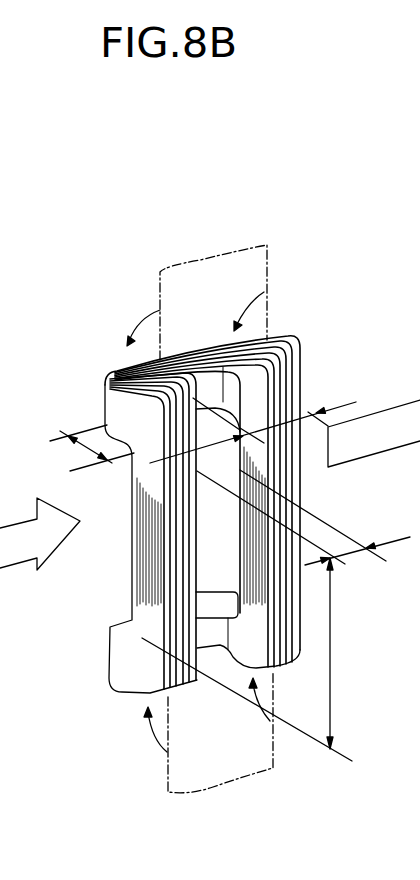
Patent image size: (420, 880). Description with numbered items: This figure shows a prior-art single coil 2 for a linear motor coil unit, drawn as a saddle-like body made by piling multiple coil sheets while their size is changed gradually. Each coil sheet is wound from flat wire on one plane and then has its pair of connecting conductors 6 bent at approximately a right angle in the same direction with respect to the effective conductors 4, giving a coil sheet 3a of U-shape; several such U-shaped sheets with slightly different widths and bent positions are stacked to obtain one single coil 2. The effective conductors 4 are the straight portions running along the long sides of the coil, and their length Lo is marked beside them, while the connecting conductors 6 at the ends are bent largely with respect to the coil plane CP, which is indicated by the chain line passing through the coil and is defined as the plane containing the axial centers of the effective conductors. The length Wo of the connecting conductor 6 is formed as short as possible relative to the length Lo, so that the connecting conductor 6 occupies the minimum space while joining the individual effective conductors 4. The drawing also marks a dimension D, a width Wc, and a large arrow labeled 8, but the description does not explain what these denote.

The single coil 2 is at (277, 287).
The coil sheet in a U-shape 3a is at (262, 345).
The effective conductor 4 is at (143, 569).
The connecting conductor 6 is at (190, 347).
The insertion direction arrow 8 is at (40, 509).
The coil plane CP is at (180, 268).
The step depth D is at (88, 474).
The length of the connecting conductor Wo is at (285, 422).
The core width Wc is at (308, 517).
The length of the effective conductor Lo is at (255, 659).